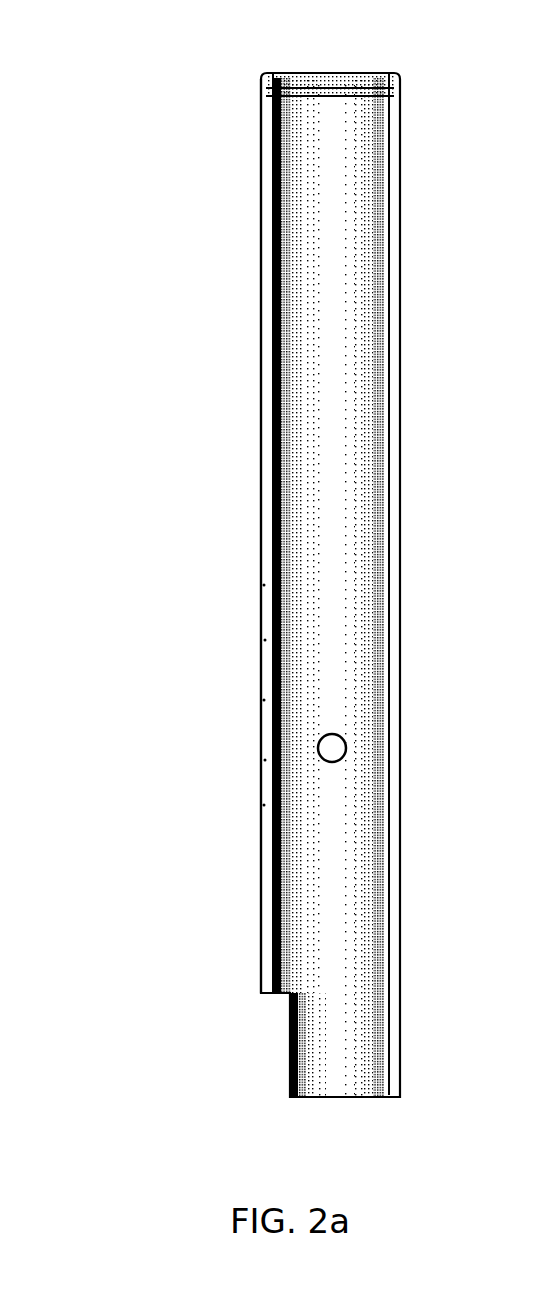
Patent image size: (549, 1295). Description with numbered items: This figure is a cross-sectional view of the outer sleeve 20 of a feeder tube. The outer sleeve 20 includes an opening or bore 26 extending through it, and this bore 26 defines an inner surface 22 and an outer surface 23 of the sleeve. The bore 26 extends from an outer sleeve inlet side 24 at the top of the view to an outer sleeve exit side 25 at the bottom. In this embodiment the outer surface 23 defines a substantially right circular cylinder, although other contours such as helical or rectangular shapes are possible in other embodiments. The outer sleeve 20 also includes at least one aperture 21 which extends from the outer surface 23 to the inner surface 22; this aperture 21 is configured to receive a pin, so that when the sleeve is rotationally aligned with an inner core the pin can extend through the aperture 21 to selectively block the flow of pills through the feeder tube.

The outer sleeve 20 is at (230, 133).
The aperture 21 is at (328, 749).
The inner surface 22 is at (313, 398).
The outer surface 23 is at (262, 505).
The outer sleeve inlet side 24 is at (318, 72).
The outer sleeve exit side 25 is at (323, 1098).
The bore 26 is at (298, 243).